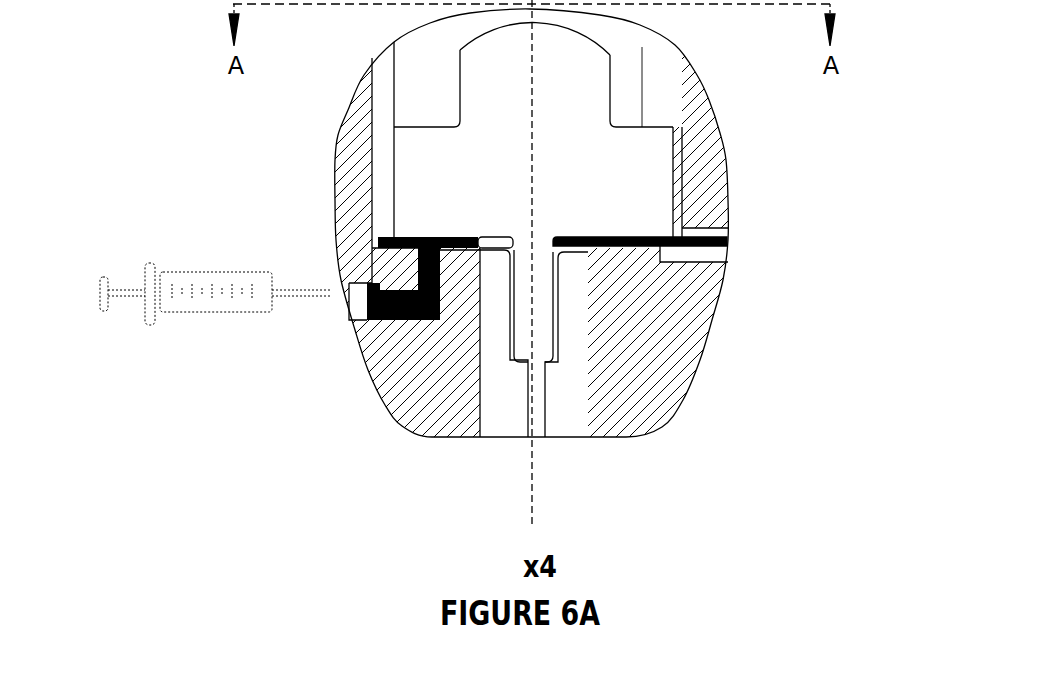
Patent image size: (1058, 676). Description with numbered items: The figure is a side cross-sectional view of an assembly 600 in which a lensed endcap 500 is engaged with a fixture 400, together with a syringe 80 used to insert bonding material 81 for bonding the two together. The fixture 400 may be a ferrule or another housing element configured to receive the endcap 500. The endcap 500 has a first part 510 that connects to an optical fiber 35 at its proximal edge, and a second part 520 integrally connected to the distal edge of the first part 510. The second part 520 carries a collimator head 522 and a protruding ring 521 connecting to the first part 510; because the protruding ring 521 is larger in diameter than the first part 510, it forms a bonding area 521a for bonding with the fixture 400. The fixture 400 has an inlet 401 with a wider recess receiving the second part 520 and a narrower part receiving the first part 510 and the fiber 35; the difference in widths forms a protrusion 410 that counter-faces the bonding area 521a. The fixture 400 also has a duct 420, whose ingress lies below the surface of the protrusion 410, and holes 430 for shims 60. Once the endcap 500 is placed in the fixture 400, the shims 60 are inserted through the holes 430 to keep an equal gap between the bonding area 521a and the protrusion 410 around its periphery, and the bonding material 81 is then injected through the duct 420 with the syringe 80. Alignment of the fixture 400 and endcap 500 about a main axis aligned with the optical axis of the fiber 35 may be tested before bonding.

The assembly 600 is at (212, 134).
The collimator head 522 is at (535, 58).
The inlet 401 is at (430, 100).
The second part 520 is at (587, 116).
The protruding ring 521 is at (634, 183).
The bonding area 521a is at (414, 234).
The endcap 500 is at (430, 181).
The bonding material 81 is at (418, 240).
The shims 60 is at (714, 235).
The holes 430 is at (724, 250).
The protrusion 410 is at (640, 255).
The fixture 400 is at (630, 274).
The syringe 80 is at (195, 316).
The duct 420 is at (351, 311).
The first part 510 is at (530, 345).
The optical fiber 35 is at (543, 413).